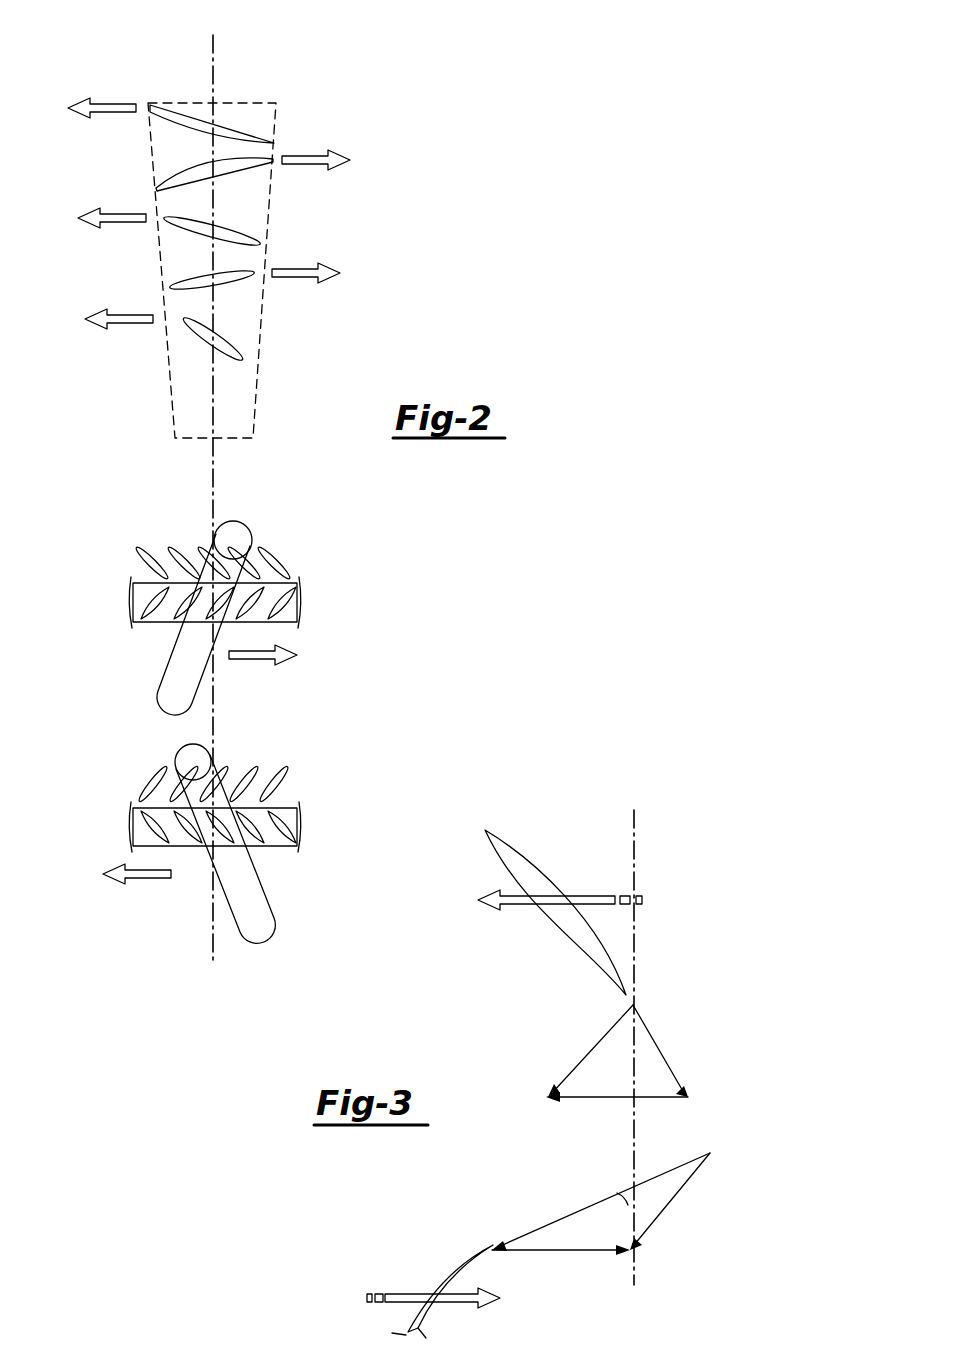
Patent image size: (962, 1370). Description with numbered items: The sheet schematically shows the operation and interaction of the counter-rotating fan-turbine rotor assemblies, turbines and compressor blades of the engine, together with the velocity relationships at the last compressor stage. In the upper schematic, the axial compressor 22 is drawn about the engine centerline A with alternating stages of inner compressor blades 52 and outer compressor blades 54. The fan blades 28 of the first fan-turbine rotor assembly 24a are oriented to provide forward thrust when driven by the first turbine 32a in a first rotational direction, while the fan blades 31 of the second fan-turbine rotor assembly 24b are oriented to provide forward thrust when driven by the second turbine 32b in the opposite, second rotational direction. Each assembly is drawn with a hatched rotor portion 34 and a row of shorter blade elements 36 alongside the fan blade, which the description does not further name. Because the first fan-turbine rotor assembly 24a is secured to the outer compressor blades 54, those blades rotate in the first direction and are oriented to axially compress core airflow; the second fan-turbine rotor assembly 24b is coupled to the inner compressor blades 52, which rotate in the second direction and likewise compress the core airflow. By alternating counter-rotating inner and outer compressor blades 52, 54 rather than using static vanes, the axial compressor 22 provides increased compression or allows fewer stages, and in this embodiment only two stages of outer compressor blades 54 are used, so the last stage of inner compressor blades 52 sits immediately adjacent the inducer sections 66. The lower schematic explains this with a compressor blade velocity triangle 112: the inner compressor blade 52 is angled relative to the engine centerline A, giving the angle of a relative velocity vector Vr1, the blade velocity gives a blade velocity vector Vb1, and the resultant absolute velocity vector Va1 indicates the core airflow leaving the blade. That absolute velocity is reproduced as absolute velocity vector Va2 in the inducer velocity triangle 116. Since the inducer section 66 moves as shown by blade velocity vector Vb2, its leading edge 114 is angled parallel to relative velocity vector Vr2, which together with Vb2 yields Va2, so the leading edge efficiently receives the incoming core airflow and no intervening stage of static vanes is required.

In FIG. 2, the engine centerline A is at (214, 52).
In FIG. 3, the engine centerline A is at (637, 828).
In FIG. 2, the axial compressor 22 is at (178, 101).
In FIG. 2, the inner compressor blades 52 is at (248, 125).
In FIG. 3, the inner compressor blades 52 is at (538, 860).
In FIG. 2, the outer compressor blades 54 is at (178, 182).
In FIG. 2, the first fan-turbine rotor assembly 24a is at (276, 591).
In FIG. 2, the second fan-turbine rotor assembly 24b is at (258, 828).
In FIG. 2, the fan blades 28 is at (248, 528).
In FIG. 2, the fan blades 31 is at (178, 758).
In FIG. 2, the first turbine 32a is at (132, 600).
In FIG. 2, the second turbine 32b is at (297, 820).
In FIG. 2, the hatched hub 34 is at (290, 612).
In FIG. 2, the blade tips 36 is at (148, 552).
In FIG. 3, the inducer sections 66 is at (399, 1270).
In FIG. 3, the compressor blade velocity triangle 112 is at (674, 1062).
In FIG. 3, the leading edge 114 is at (448, 1274).
In FIG. 3, the inducer velocity triangle 116 is at (667, 1229).
In FIG. 3, the absolute velocity vector Va1 is at (588, 1046).
In FIG. 3, the relative velocity vector Vr1 is at (666, 1048).
In FIG. 3, the blade velocity vector Vb1 is at (606, 1100).
In FIG. 3, the relative velocity vector Vr2 is at (580, 1206).
In FIG. 3, the absolute velocity vector Va2 is at (666, 1205).
In FIG. 3, the blade velocity vector Vb2 is at (546, 1253).